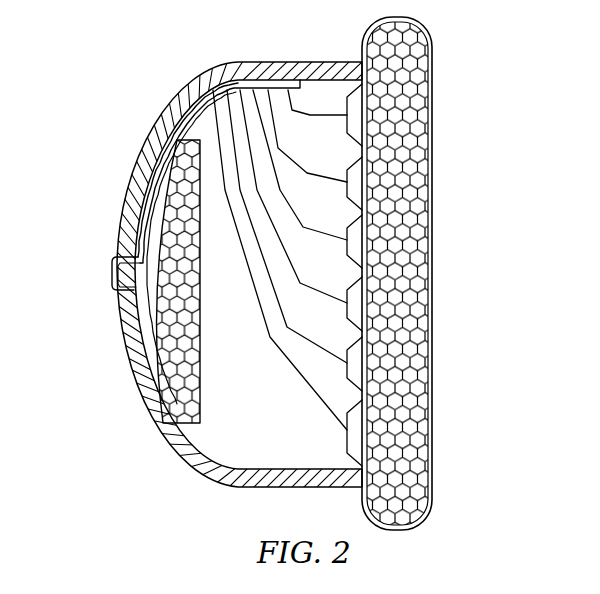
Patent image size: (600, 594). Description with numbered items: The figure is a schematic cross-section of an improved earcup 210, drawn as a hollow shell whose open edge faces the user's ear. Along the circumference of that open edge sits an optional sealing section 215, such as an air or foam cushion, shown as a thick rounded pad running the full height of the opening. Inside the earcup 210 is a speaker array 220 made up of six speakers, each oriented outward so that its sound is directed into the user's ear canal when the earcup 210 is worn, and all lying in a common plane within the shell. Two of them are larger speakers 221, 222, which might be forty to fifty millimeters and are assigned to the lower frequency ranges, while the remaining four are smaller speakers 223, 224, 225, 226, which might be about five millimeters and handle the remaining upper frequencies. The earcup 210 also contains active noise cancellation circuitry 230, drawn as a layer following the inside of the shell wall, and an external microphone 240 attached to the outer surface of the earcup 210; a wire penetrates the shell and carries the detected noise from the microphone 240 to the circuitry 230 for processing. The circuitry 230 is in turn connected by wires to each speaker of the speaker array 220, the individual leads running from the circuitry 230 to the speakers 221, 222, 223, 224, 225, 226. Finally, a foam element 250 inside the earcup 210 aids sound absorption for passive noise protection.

The earcup 210 is at (147, 106).
The sealing section 215 is at (433, 63).
The speaker array 220 is at (343, 476).
The larger speaker 221 is at (400, 118).
The larger speaker 222 is at (393, 435).
The smaller speaker 223 is at (407, 193).
The smaller speaker 224 is at (388, 245).
The smaller speaker 225 is at (390, 313).
The smaller speaker 226 is at (393, 373).
The active noise cancellation circuitry 230 is at (232, 86).
The external microphone 240 is at (111, 278).
The foam element 250 is at (156, 313).